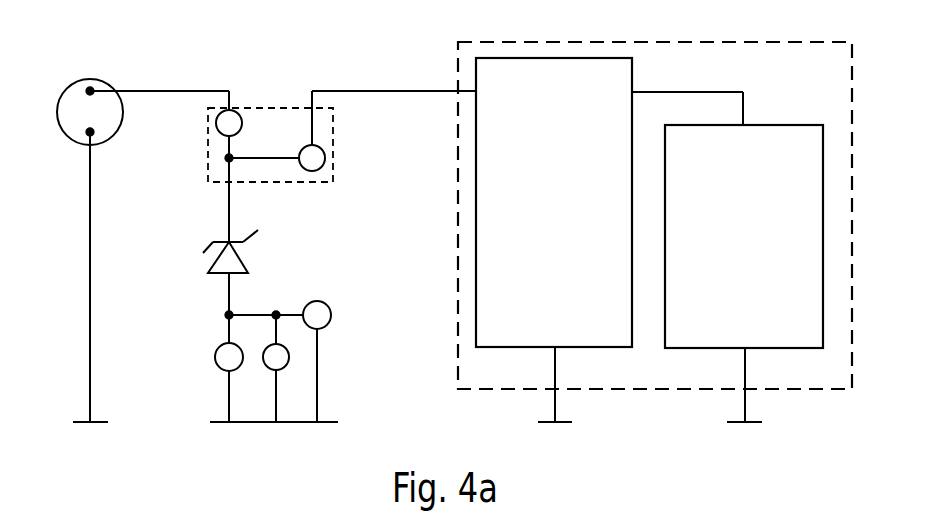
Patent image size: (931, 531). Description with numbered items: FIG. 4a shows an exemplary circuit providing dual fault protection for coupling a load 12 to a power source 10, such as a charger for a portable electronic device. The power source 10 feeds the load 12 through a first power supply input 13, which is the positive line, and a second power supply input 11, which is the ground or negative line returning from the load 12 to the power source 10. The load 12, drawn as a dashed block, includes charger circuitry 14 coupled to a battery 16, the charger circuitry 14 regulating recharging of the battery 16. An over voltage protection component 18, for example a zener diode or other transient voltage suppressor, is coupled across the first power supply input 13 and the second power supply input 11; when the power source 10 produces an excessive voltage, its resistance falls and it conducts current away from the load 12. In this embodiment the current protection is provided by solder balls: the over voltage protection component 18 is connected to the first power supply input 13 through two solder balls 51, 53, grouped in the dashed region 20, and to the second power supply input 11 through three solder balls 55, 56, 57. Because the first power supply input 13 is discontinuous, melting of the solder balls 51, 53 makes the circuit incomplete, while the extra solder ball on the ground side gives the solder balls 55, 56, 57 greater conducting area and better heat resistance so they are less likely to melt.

The power source 10 is at (93, 79).
The second power supply input 11 is at (90, 270).
The load 12 is at (658, 42).
The first power supply input 13 is at (377, 91).
The charger circuitry 14 is at (518, 349).
The battery 16 is at (707, 349).
The over voltage protection component 18 is at (207, 270).
The switch module 20 is at (337, 155).
The solder ball 51 is at (243, 121).
The solder ball 53 is at (300, 153).
The solder ball 55 is at (218, 345).
The solder ball 56 is at (282, 370).
The solder ball 57 is at (330, 305).